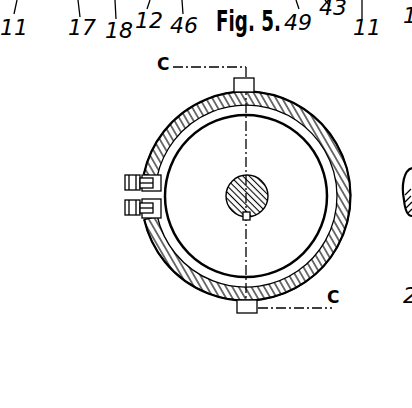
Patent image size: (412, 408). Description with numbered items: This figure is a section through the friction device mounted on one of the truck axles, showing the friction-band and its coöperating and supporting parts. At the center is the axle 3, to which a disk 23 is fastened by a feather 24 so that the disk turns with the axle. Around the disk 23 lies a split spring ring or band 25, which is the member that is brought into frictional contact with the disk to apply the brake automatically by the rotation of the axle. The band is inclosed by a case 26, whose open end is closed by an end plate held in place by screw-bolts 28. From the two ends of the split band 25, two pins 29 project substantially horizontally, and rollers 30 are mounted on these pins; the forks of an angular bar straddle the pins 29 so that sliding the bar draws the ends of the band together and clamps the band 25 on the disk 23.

The axle 3 is at (262, 180).
The disk 23 is at (297, 170).
The feather 24 is at (251, 218).
The split spring ring or band 25 is at (278, 112).
The case 26 is at (181, 115).
The screw-bolts 28 is at (228, 297).
The pins 29 is at (146, 218).
The rollers 30 is at (127, 213).